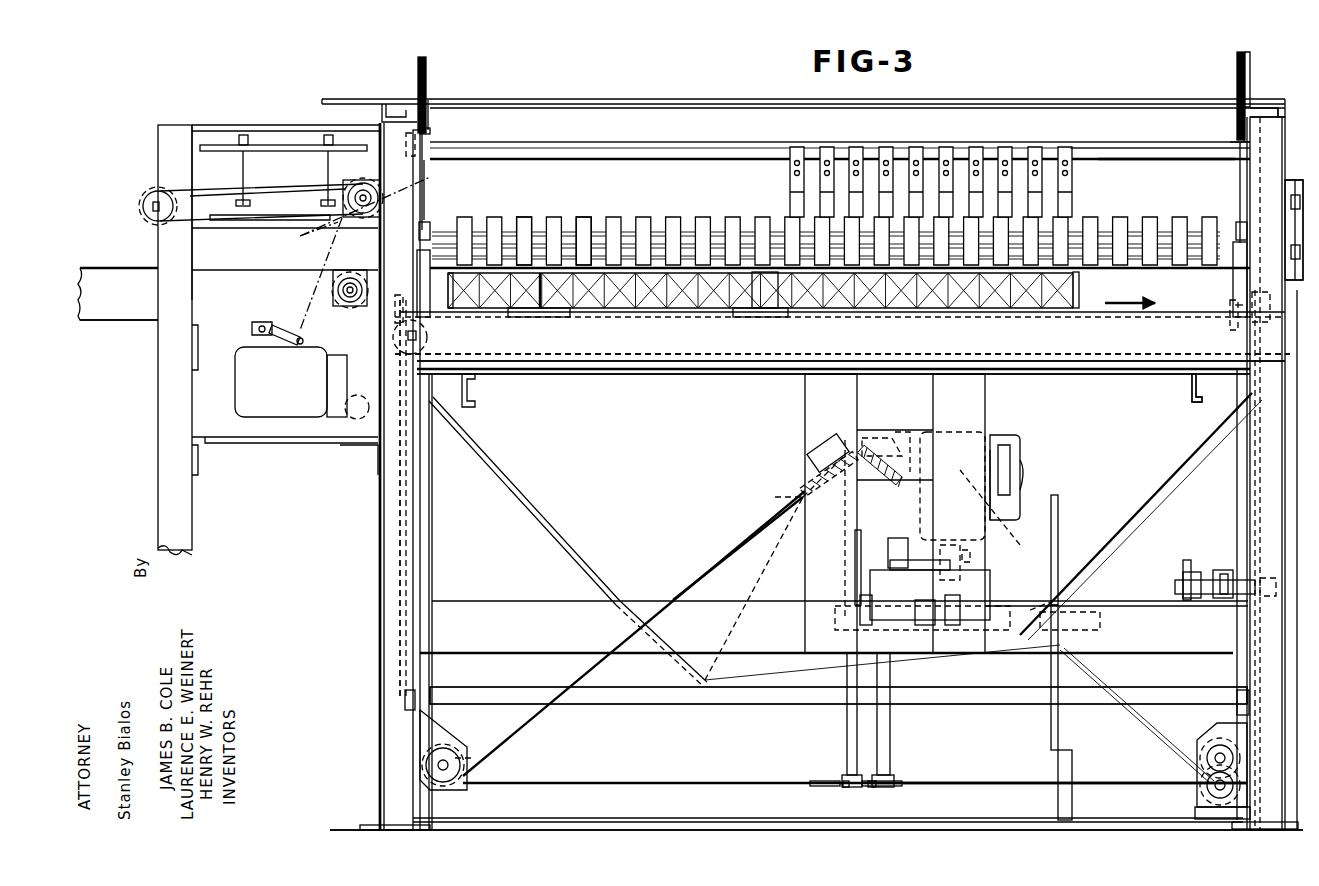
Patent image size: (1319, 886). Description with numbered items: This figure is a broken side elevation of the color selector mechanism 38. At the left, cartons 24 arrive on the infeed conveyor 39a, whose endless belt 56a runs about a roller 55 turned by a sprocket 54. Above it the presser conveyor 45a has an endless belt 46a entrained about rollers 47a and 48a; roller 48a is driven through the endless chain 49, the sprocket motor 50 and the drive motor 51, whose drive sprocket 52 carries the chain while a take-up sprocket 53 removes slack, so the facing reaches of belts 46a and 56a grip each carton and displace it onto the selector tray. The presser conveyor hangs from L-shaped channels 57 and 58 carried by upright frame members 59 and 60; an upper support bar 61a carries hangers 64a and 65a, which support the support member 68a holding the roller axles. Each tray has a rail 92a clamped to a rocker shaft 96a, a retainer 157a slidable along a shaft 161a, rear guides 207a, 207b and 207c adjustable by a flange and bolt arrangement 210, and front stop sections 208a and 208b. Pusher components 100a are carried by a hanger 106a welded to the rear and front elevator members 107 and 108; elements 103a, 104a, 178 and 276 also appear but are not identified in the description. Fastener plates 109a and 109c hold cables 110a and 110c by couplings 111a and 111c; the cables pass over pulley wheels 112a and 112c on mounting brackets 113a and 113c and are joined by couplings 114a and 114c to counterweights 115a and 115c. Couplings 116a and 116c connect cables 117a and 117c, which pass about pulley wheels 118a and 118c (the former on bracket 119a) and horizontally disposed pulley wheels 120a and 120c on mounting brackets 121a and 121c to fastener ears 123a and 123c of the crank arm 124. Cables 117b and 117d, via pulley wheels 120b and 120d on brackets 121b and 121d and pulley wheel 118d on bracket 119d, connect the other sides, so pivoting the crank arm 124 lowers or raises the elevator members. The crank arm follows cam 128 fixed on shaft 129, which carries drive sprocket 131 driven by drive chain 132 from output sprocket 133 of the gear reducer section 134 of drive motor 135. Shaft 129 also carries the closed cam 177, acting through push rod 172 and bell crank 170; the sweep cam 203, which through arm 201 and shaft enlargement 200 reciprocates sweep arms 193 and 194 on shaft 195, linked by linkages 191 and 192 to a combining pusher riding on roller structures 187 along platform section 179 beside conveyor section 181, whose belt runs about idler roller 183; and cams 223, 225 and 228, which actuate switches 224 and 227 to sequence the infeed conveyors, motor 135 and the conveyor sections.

The color selector mechanism 38 is at (694, 86).
The L-shaped channel 57 is at (194, 126).
The L-shaped channel 58 is at (374, 134).
The upper support bar 61a is at (262, 144).
The hanger 64a is at (238, 170).
The hanger 65a is at (326, 166).
The endless belt 46a is at (280, 182).
The presser conveyor 45a is at (153, 195).
The roller 47a is at (153, 214).
The roller 48a is at (374, 181).
The sprocket motor 50 is at (424, 174).
The endless chain 49 is at (316, 236).
The support member 68a is at (212, 232).
The infeed conveyor 39a is at (98, 265).
The endless belt 56a is at (107, 274).
The sprocket 54 is at (310, 281).
The roller 55 is at (330, 296).
The take-up sprocket 53 is at (295, 357).
The drive motor 51 is at (284, 405).
The drive sprocket 52 is at (344, 393).
The upright frame member 59 is at (193, 518).
The sweep arm 194 is at (398, 500).
The upright frame member 60 is at (378, 557).
The mounting bracket 113a is at (413, 80).
The pulley wheel 112a is at (425, 62).
The ferrule or coupling 111a is at (428, 105).
The rear elevator member 107 is at (443, 125).
The fastener plate 109a is at (430, 142).
The cable 110a is at (430, 194).
The ferrule or coupling 114a is at (430, 222).
The linkage 192 is at (416, 280).
The roller structures 187 is at (395, 296).
The idler roller 183 is at (428, 348).
The rocker shaft 96a is at (635, 222).
The shaft 161a is at (520, 218).
The retainer 157a is at (583, 217).
The gripper 103a is at (821, 147).
The pusher component 100a is at (788, 182).
The rail 104a is at (1092, 156).
The hanger 106a is at (1152, 160).
The ferrule or coupling 114c is at (1235, 226).
The fastener plate 109c is at (1240, 142).
The cable 110c is at (1240, 182).
The ferrule or coupling 111c is at (1238, 122).
The pulley wheel 112c is at (1237, 68).
The mounting bracket 113c is at (1255, 50).
The front elevator member 108 is at (1258, 106).
The bell crank 170 is at (1280, 242).
The linkage 191 is at (1264, 297).
The counterweight 115c is at (1232, 291).
The rail 92a is at (1138, 292).
The front stop section 208a is at (1099, 290).
The carton 24 is at (898, 311).
The rear guide 207c is at (454, 310).
The rear guide 207b is at (535, 308).
The front stop section 208b is at (720, 308).
The rear guide 207a is at (774, 316).
The platform section 179 is at (582, 366).
The conveyor section 181 is at (630, 367).
The flange and bolt arrangement 210 is at (666, 366).
The counterweight 115a is at (432, 530).
The crank arm 124 is at (830, 728).
The bracket 121b is at (815, 437).
The pulley wheel 120b is at (815, 476).
The angularly oriented pulley wheel 120d is at (865, 444).
The bracket 121d is at (894, 432).
The gear reducer section 134 is at (960, 438).
The output sprocket 133 is at (1013, 448).
The drive motor 135 is at (1002, 446).
The drive chain 132 is at (992, 528).
The cam 128 is at (854, 538).
The limit switch 227 is at (976, 522).
The block 276 is at (917, 556).
The switch 224 is at (939, 582).
The cam 225 is at (910, 640).
The cam 228 is at (952, 646).
The cam 223 is at (941, 640).
The shaft 129 is at (840, 630).
The drive sprocket 131 is at (998, 665).
The sweep cam 203 is at (1058, 548).
The push rod 172 is at (1280, 372).
The sweep arm 193 is at (1250, 426).
The bearing 178 is at (1260, 580).
The cam 177 is at (1184, 570).
The shaft 195 is at (636, 702).
The ferrule or coupling 116a is at (424, 720).
The bracket 119a is at (444, 741).
The pulley wheel 118a is at (478, 757).
The cable 117b is at (549, 711).
The cable 117a is at (558, 782).
The mounting bracket 121a is at (840, 774).
The mounting bracket 121c is at (886, 776).
The pulley wheel 120a is at (818, 786).
The fastener ear 123a is at (847, 788).
The fastener ear 123c is at (867, 788).
The pulley wheel 120c is at (897, 786).
The shaft enlargement 200 is at (972, 820).
The cable 117c is at (1040, 774).
The arm 201 is at (1056, 726).
The cable 117d is at (1124, 720).
The ferrule or coupling 116c is at (1233, 712).
The pulley wheel 118c is at (1197, 753).
The pulley wheel 118d is at (1200, 797).
The bracket 119d is at (1205, 810).